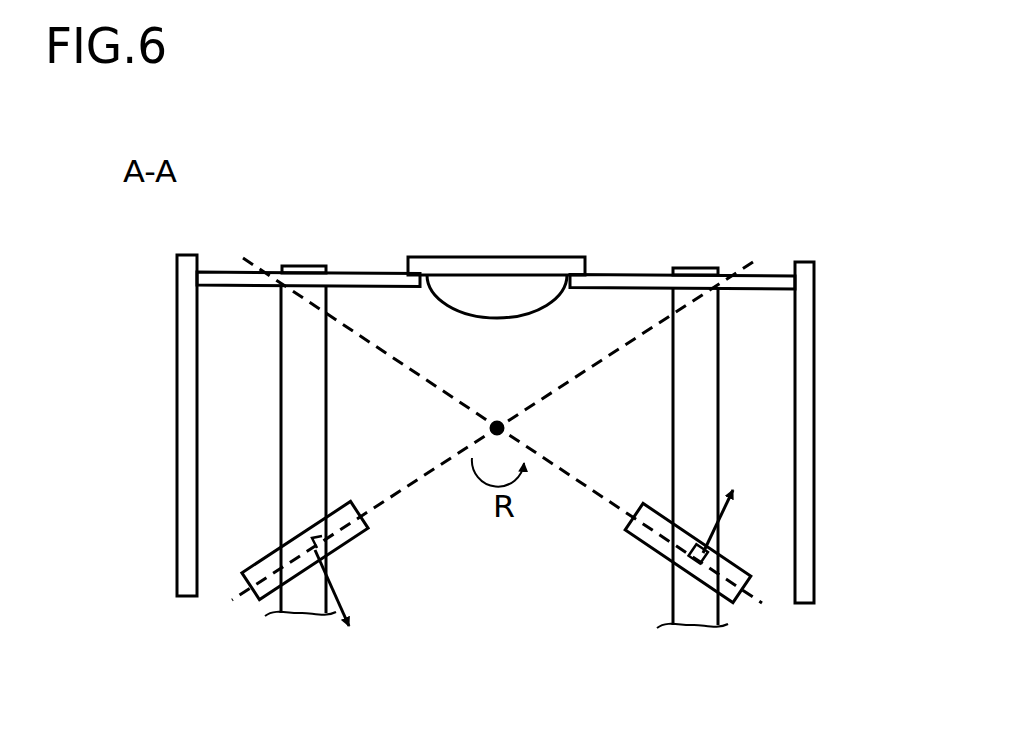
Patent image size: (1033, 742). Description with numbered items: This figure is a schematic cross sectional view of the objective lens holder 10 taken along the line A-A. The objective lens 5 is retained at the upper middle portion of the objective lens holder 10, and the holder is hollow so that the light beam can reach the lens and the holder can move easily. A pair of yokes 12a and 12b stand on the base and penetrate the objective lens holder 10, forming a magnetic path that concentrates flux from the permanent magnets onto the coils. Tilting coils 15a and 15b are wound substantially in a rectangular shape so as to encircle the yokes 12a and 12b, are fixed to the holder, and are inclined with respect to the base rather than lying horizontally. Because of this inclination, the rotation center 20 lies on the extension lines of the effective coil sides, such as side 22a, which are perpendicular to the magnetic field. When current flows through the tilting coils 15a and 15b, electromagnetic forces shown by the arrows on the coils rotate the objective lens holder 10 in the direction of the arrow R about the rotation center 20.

The objective lens 5 is at (500, 257).
The objective lens holder 10 is at (177, 353).
The yoke 12a is at (718, 427).
The yoke 12b is at (281, 438).
The tilting coil 15a is at (667, 563).
The tilting coil 15b is at (282, 543).
The rotation center 20 is at (497, 428).
The side 22a is at (347, 537).